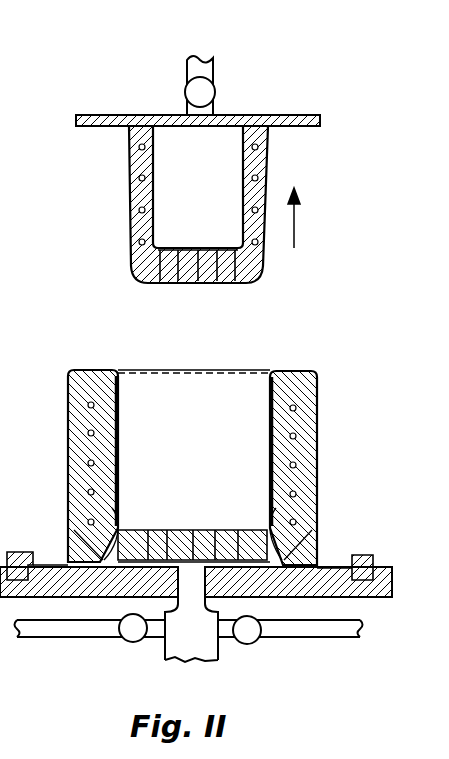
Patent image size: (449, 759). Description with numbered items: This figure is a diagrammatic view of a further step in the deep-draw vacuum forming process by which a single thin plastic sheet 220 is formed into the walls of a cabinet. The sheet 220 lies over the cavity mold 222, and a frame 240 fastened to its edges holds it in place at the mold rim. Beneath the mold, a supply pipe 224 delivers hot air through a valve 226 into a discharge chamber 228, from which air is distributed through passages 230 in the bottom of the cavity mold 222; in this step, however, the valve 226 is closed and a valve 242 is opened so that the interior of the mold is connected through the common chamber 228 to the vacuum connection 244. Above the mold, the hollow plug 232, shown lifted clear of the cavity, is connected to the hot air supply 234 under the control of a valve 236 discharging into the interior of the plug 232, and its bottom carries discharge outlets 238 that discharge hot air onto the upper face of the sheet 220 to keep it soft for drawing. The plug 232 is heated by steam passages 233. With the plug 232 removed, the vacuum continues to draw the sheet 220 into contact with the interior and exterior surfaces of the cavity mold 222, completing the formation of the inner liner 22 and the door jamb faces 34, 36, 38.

The inner liner 22 is at (190, 465).
The door jamb face 34 is at (82, 370).
The door jamb face 36 is at (195, 370).
The door jamb face 38 is at (298, 373).
The thin sheet 220 is at (230, 387).
The cavity mold 222 is at (221, 453).
The supply pipe 224 is at (67, 638).
The valve 226 is at (135, 644).
The discharge chamber 228 is at (192, 660).
The passages 230 is at (203, 562).
The hollow plug 232 is at (129, 208).
The steam passages 233 is at (265, 185).
The hot air supply 234 is at (202, 62).
The valve 236 is at (185, 92).
The discharge outlets 238 is at (234, 250).
The frame 240 is at (33, 552).
The valve 242 is at (248, 645).
The vacuum connection 244 is at (328, 638).